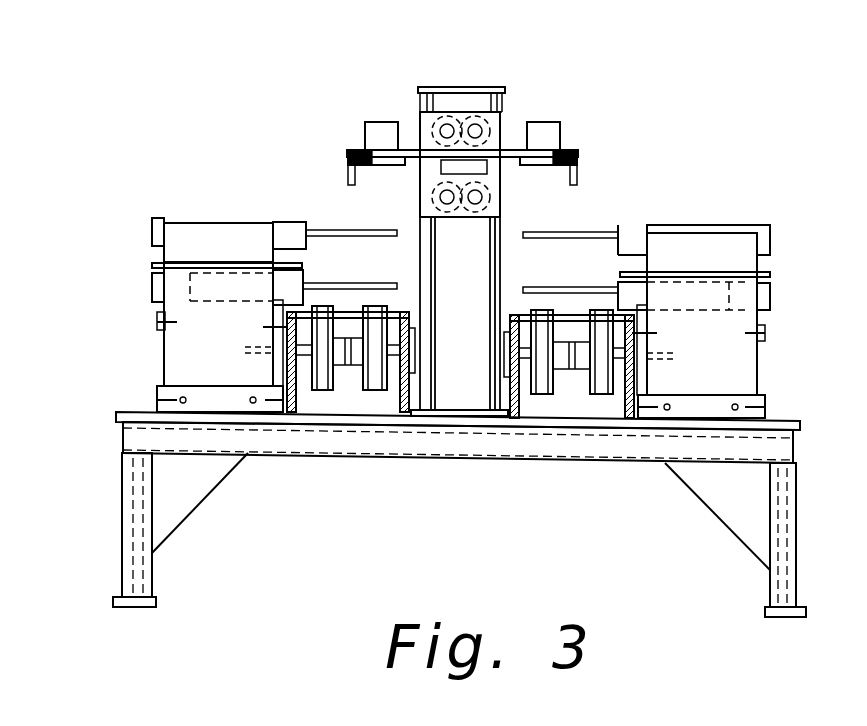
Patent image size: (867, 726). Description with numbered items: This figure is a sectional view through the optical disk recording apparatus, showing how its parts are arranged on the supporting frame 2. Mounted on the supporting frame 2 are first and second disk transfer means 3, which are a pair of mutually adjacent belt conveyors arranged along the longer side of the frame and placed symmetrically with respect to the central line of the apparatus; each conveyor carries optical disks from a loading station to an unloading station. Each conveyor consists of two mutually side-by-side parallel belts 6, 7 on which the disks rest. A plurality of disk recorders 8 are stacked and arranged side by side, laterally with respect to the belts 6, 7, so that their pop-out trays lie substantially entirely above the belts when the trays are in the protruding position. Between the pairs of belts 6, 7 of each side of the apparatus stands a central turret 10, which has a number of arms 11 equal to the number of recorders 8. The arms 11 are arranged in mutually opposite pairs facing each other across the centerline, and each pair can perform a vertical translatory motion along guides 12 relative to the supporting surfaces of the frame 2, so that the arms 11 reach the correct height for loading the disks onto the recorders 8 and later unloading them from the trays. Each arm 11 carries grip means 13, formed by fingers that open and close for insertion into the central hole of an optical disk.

The supporting frame 2 is at (125, 437).
The disk transfer means 3 is at (290, 328).
The belt 6 is at (322, 390).
The belt 7 is at (378, 386).
The disk recorder 8 is at (158, 222).
The central turret 10 is at (527, 187).
The arm 11 is at (412, 140).
The guide 12 is at (487, 290).
The grip means 13 is at (349, 172).